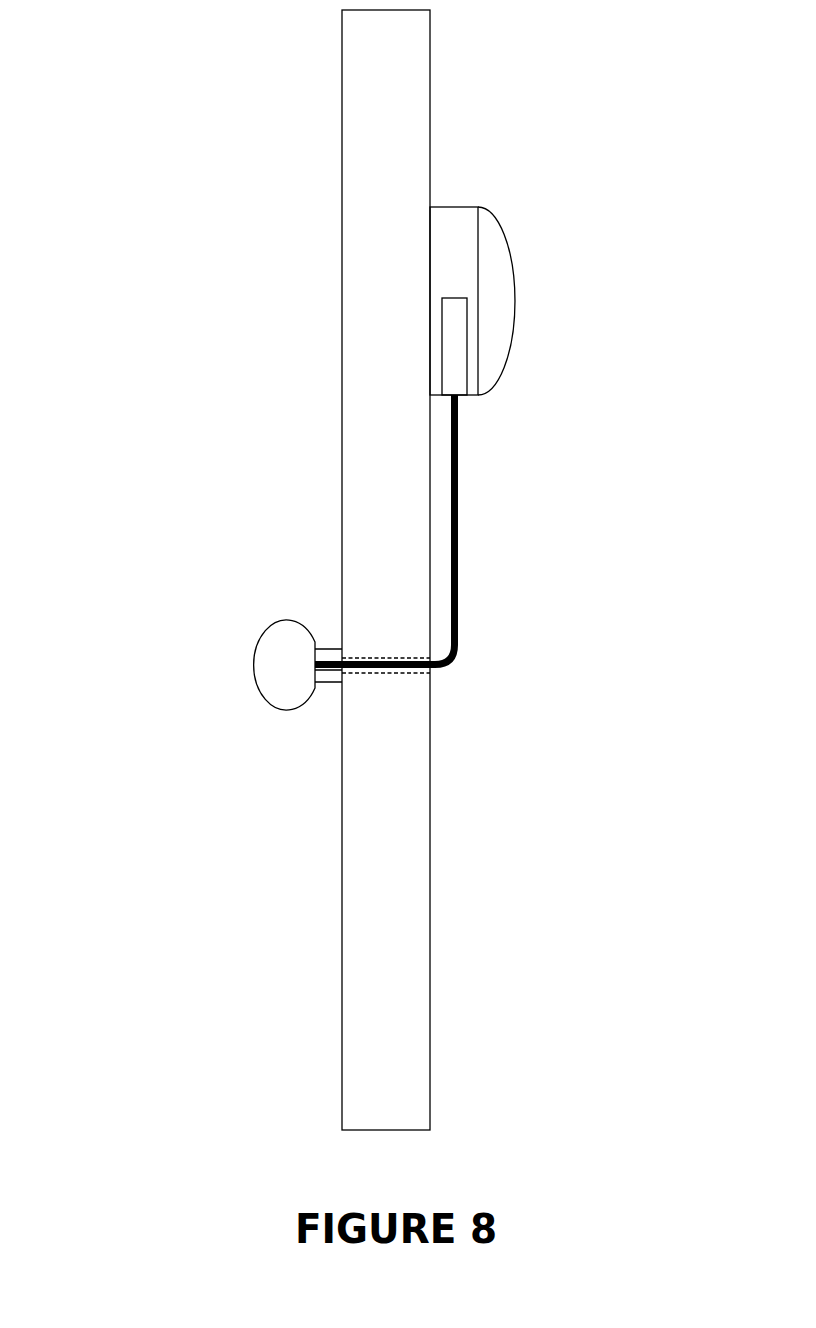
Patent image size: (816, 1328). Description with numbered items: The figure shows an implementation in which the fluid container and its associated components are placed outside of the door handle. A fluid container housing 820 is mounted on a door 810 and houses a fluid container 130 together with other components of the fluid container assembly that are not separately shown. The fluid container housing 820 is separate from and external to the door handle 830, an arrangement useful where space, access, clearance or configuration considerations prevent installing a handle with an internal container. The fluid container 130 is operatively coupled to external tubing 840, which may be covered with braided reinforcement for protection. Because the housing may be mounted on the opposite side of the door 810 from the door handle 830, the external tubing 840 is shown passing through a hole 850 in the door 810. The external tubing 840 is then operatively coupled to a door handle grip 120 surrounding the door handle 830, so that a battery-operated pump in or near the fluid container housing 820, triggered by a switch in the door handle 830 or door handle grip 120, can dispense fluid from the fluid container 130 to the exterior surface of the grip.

The door 810 is at (374, 113).
The fluid container housing 820 is at (458, 200).
The fluid container 130 is at (453, 322).
The external tubing 840 is at (457, 578).
The hole 850 is at (387, 655).
The door handle 830 is at (280, 652).
The door handle grip 120 is at (277, 713).